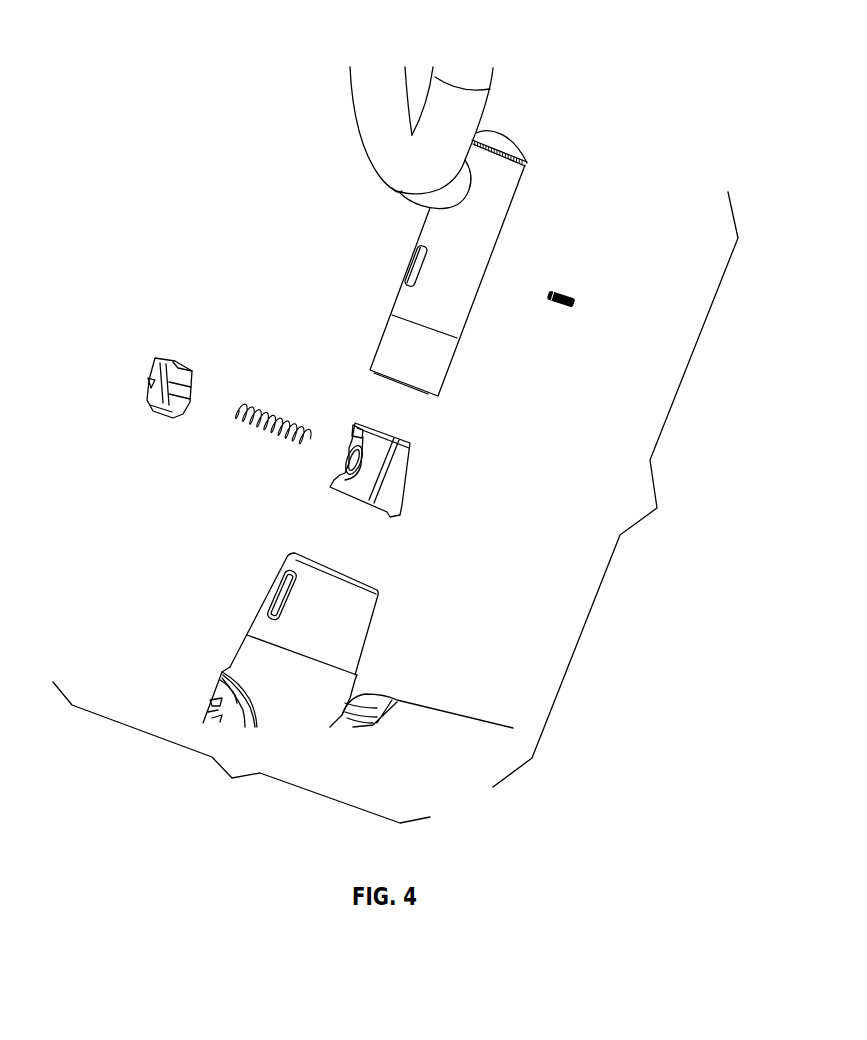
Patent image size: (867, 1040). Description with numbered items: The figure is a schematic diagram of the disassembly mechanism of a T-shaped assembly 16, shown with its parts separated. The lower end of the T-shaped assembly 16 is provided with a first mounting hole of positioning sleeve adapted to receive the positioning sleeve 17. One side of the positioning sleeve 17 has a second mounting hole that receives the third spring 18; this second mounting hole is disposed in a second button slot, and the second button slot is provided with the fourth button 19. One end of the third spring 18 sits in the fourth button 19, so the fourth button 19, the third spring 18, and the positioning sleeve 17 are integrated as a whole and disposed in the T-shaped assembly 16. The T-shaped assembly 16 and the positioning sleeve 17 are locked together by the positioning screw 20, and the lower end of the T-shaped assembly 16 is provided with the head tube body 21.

The T-shaped assembly 16 is at (385, 330).
The positioning sleeve 17 is at (357, 422).
The third spring 18 is at (270, 418).
The fourth button 19 is at (150, 358).
The positioning screw 20 is at (580, 295).
The head tube body 21 is at (267, 590).